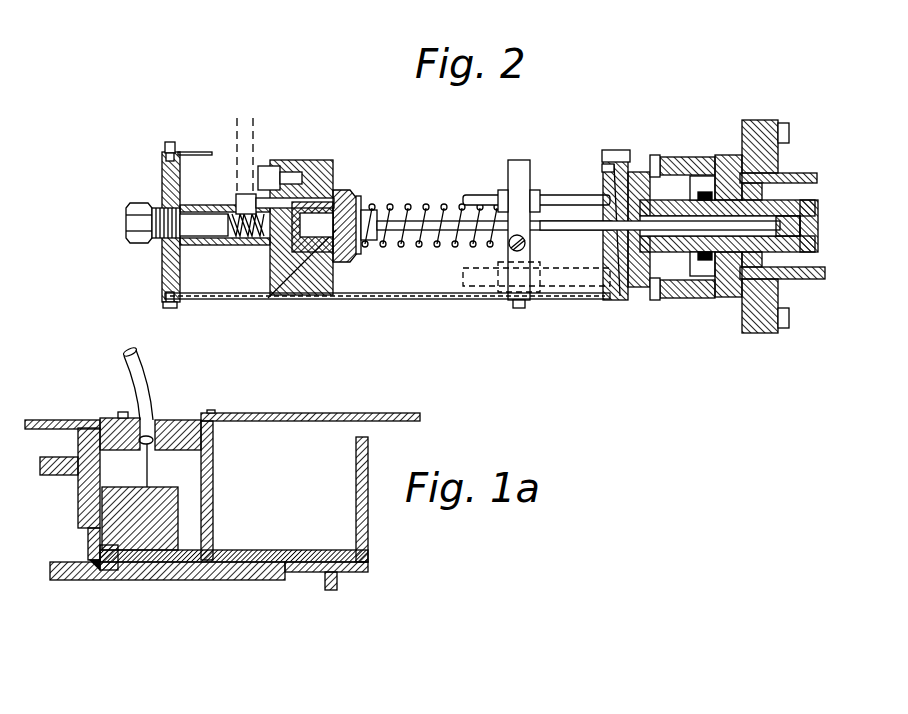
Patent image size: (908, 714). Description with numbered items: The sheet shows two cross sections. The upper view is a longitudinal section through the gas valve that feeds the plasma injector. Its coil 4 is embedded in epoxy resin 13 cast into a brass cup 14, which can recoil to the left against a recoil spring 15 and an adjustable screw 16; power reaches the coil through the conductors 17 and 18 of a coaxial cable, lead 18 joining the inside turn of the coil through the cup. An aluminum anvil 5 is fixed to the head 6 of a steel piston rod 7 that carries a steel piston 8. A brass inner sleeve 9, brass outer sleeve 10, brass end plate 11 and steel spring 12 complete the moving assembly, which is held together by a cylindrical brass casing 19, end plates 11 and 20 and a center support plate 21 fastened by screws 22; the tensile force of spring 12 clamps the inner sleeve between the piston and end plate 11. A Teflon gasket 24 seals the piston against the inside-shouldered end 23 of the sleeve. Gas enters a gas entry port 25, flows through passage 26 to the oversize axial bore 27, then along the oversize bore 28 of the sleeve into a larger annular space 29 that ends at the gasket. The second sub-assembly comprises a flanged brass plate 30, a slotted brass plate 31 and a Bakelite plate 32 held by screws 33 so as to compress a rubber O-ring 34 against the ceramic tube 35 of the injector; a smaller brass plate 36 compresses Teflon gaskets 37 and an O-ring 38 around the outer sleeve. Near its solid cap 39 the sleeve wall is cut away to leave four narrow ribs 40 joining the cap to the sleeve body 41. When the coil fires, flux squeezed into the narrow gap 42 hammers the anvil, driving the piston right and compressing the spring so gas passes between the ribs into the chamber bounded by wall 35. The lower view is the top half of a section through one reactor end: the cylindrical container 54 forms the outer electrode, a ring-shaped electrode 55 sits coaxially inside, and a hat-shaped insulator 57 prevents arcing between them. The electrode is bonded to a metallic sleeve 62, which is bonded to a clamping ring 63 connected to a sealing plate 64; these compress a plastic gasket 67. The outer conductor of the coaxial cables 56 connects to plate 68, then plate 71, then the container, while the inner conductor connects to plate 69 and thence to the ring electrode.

In FIG. 2, the coil 4 is at (359, 196).
In FIG. 2, the aluminum anvil 5 is at (328, 252).
In FIG. 2, the head 6 is at (368, 242).
In FIG. 2, the steel piston rod 7 is at (386, 208).
In FIG. 2, the steel piston 8 is at (805, 204).
In FIG. 2, the brass inner sleeve 9 is at (618, 300).
In FIG. 2, the brass outer sleeve 10 is at (636, 174).
In FIG. 2, the brass end plate 11 is at (615, 164).
In FIG. 2, the steel spring 12 is at (422, 212).
In FIG. 2, the epoxy resin 13 is at (340, 190).
In FIG. 2, the brass cup 14 is at (303, 160).
In FIG. 2, the recoil spring 15 is at (246, 240).
In FIG. 2, the adjustable screw 16 is at (184, 206).
In FIG. 2, the conductor 17 is at (238, 194).
In FIG. 2, the conductor 18 is at (250, 166).
In FIG. 2, the cylindrical brass casing 19 is at (366, 299).
In FIG. 2, the end plate 20 is at (161, 289).
In FIG. 2, the center support plate 21 is at (510, 252).
In FIG. 2, the screws 22 is at (172, 305).
In FIG. 2, the inside-shouldered end 23 is at (770, 173).
In FIG. 2, the Teflon gasket 24 is at (790, 205).
In FIG. 2, the gas entry port 25 is at (604, 170).
In FIG. 2, the passage 26 is at (606, 182).
In FIG. 2, the axial bore 27 is at (604, 240).
In FIG. 2, the bore 28 is at (664, 158).
In FIG. 2, the annular space 29 is at (700, 262).
In FIG. 2, the flanged brass plate 30 is at (758, 120).
In FIG. 2, the brass plate 31 is at (675, 299).
In FIG. 2, the Bakelite plate 32 is at (783, 123).
In FIG. 2, the screws 33 is at (760, 120).
In FIG. 2, the rubber O-ring 34 is at (728, 170).
In FIG. 2, the ceramic tube 35 is at (826, 268).
In FIG. 1A, the ceramic tube 35 is at (174, 565).
In FIG. 2, the smaller brass plate 36 is at (705, 178).
In FIG. 2, the Teflon gaskets 37 is at (748, 236).
In FIG. 2, the O-ring 38 is at (708, 276).
In FIG. 2, the solid cap 39 is at (818, 210).
In FIG. 2, the ribs 40 is at (800, 226).
In FIG. 2, the sleeve body 41 is at (826, 279).
In FIG. 2, the gap 42 is at (300, 296).
In FIG. 1A, the cylindrical container 54 is at (296, 422).
In FIG. 1A, the ring-shaped electrode 55 is at (338, 587).
In FIG. 1A, the coaxial cables 56 is at (150, 394).
In FIG. 1A, the hat-shaped insulator 57 is at (356, 492).
In FIG. 1A, the sleeve 62 is at (252, 580).
In FIG. 1A, the clamping ring 63 is at (108, 570).
In FIG. 1A, the sealing plate 64 is at (88, 542).
In FIG. 1A, the plastic gasket 67 is at (90, 565).
In FIG. 1A, the plate 68 is at (110, 418).
In FIG. 1A, the plate 69 is at (168, 502).
In FIG. 1A, the plate 71 is at (214, 474).